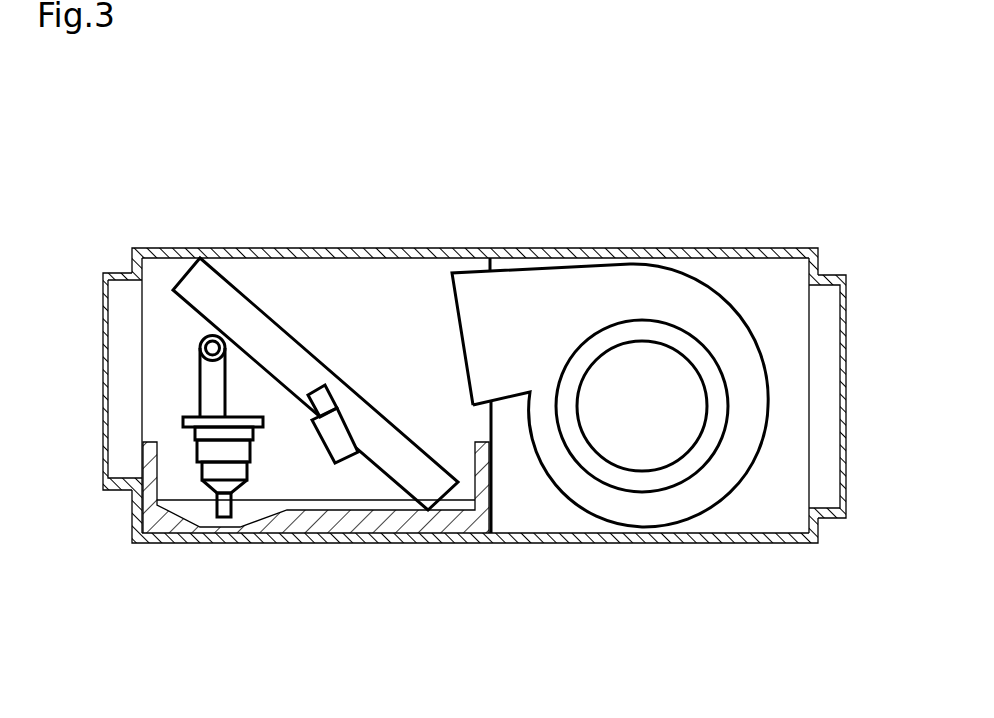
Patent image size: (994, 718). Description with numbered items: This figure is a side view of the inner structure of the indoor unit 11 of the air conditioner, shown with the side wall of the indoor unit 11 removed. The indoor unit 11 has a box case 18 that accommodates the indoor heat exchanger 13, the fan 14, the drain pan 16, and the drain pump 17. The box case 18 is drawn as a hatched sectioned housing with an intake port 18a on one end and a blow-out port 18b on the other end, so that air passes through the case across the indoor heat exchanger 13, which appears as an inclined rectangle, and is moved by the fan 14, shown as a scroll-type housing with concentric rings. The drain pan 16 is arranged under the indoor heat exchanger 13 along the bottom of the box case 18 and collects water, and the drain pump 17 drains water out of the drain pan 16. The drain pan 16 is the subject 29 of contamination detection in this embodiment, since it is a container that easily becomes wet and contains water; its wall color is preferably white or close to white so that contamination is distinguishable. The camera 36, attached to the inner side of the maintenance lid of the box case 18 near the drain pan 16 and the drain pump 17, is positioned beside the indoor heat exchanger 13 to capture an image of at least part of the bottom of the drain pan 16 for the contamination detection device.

The indoor unit 11 is at (673, 168).
The indoor heat exchanger 13 is at (298, 337).
The fan 14 is at (717, 275).
The drain pan 16 is at (316, 525).
The subject of contamination detection 29 is at (300, 527).
The drain pump 17 is at (197, 448).
The box case 18 is at (773, 250).
The intake port 18a is at (848, 458).
The blow-out port 18b is at (105, 424).
The camera 36 is at (323, 448).